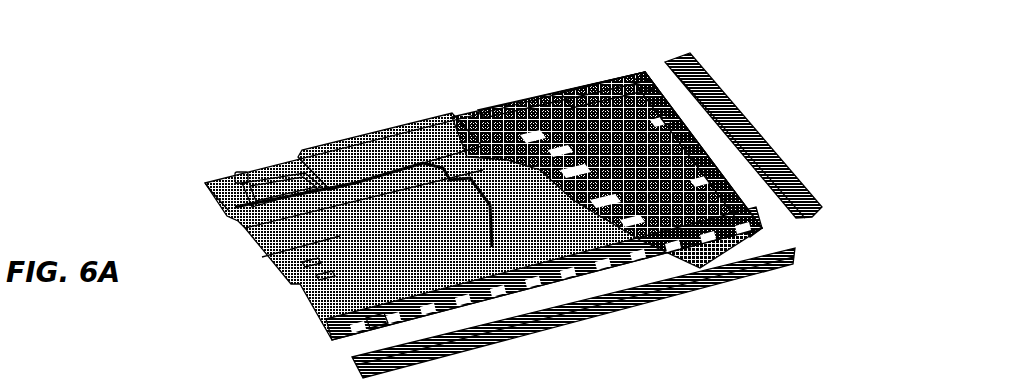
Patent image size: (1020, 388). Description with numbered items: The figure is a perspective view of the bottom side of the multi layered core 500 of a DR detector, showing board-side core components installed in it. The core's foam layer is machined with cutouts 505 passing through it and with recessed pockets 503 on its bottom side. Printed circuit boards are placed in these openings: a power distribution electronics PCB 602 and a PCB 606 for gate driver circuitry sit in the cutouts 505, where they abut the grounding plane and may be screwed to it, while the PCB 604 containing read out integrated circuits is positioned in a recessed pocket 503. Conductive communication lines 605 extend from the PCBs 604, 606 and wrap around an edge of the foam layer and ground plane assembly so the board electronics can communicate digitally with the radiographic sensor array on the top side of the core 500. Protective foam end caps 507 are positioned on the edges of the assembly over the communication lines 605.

The multi layered core 500 is at (543, 230).
The recessed pockets 503 is at (572, 83).
The cutouts 505 is at (425, 122).
The protective foam end caps 507 is at (820, 236).
The power distribution electronics PCB 602 is at (540, 93).
The PCB containing read out integrated circuits 604 is at (614, 75).
The conductive communication lines 605 is at (666, 96).
The PCB for gate driver circuitry 606 is at (372, 323).